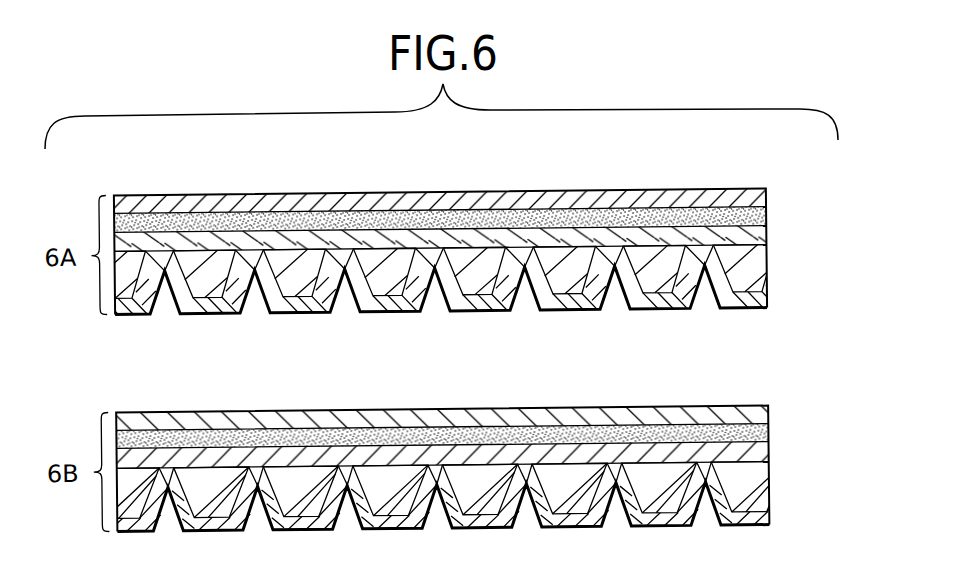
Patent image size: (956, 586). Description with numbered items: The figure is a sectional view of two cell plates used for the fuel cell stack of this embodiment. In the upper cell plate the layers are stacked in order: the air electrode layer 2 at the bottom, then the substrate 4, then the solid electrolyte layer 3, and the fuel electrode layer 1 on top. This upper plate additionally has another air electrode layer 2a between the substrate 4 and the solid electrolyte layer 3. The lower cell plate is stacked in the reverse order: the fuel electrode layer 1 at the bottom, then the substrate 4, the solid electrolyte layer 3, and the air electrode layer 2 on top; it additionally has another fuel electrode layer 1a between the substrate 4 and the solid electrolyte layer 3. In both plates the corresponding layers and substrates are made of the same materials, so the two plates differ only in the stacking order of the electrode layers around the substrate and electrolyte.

The fuel electrode layer 1 is at (757, 197).
The another fuel electrode layer 1a is at (758, 449).
The air electrode layer 2 is at (758, 297).
The another air electrode layer 2a is at (758, 231).
The solid electrolyte layer 3 is at (758, 215).
The substrate 4 is at (758, 265).